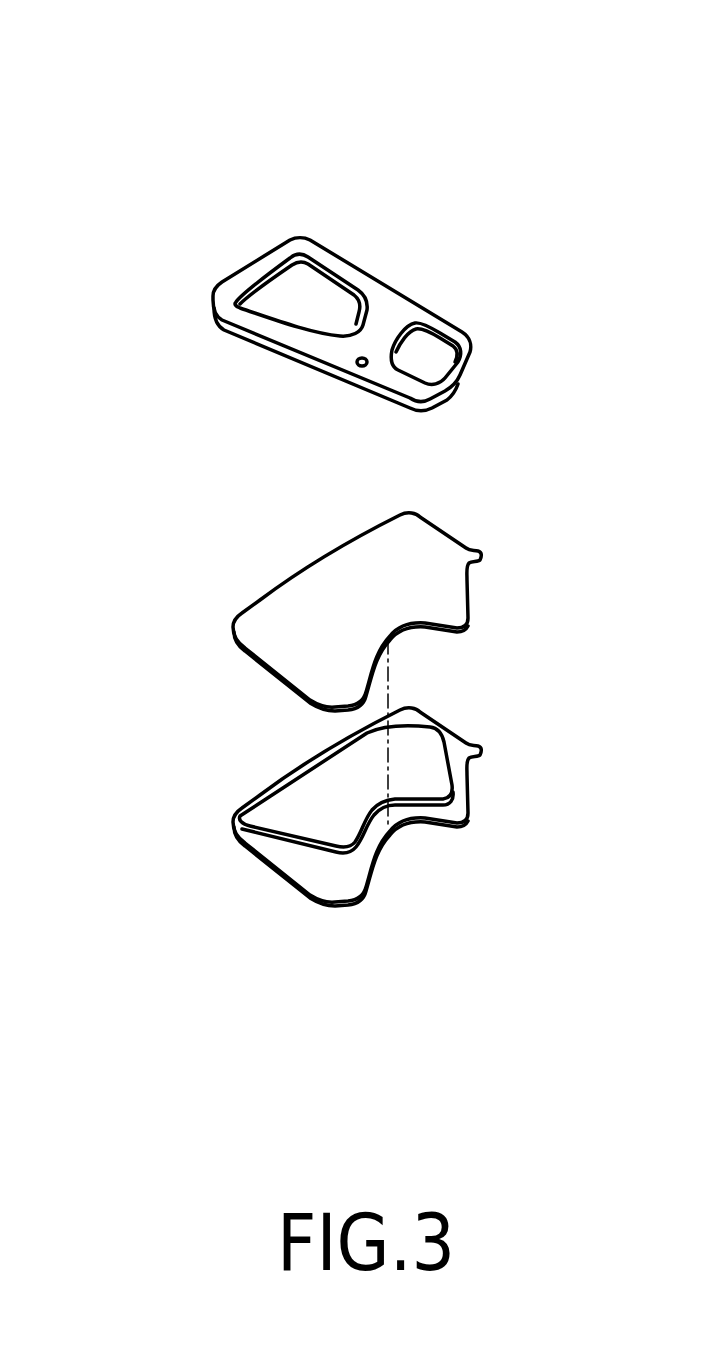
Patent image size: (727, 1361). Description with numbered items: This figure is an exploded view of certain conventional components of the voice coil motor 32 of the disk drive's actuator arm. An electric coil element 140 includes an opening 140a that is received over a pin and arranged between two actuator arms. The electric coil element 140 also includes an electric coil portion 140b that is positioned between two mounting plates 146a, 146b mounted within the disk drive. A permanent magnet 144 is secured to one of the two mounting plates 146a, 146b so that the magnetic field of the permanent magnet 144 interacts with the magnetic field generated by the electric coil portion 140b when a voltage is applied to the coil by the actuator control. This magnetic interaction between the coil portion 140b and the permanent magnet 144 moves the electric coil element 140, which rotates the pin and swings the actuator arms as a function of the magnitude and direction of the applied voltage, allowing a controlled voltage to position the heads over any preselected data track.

The voice coil motor 32 is at (207, 134).
The electric coil element 140 is at (415, 300).
The opening 140a is at (397, 383).
The electric coil portion 140b is at (363, 290).
The permanent magnet 144 is at (433, 775).
The mounting plate 146a is at (243, 632).
The mounting plate 146b is at (270, 860).